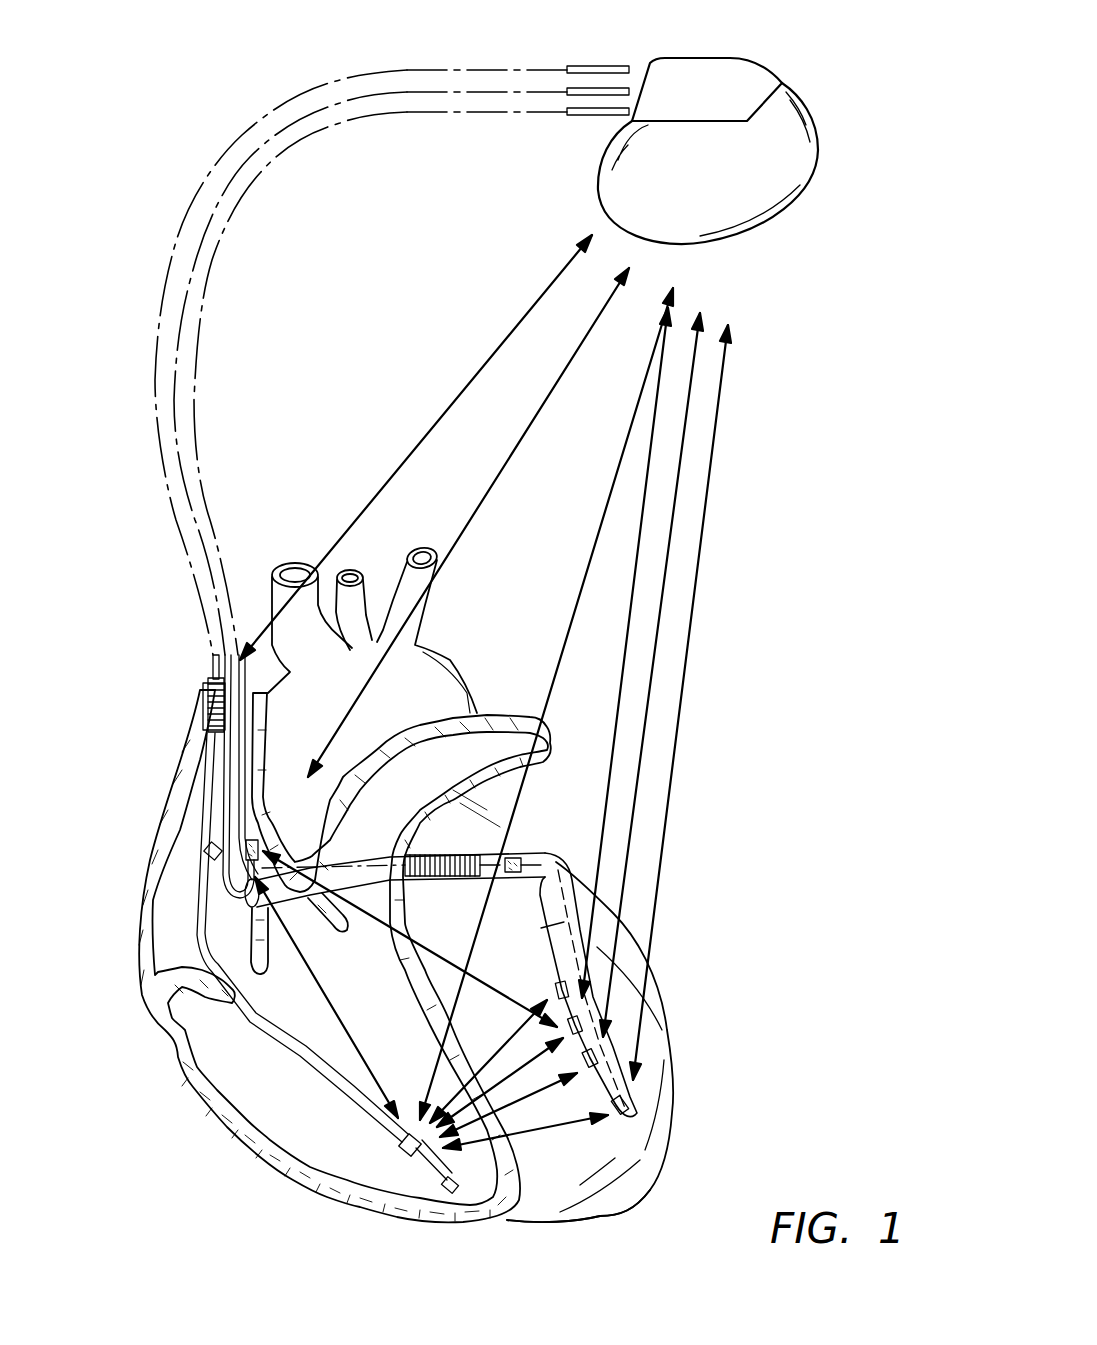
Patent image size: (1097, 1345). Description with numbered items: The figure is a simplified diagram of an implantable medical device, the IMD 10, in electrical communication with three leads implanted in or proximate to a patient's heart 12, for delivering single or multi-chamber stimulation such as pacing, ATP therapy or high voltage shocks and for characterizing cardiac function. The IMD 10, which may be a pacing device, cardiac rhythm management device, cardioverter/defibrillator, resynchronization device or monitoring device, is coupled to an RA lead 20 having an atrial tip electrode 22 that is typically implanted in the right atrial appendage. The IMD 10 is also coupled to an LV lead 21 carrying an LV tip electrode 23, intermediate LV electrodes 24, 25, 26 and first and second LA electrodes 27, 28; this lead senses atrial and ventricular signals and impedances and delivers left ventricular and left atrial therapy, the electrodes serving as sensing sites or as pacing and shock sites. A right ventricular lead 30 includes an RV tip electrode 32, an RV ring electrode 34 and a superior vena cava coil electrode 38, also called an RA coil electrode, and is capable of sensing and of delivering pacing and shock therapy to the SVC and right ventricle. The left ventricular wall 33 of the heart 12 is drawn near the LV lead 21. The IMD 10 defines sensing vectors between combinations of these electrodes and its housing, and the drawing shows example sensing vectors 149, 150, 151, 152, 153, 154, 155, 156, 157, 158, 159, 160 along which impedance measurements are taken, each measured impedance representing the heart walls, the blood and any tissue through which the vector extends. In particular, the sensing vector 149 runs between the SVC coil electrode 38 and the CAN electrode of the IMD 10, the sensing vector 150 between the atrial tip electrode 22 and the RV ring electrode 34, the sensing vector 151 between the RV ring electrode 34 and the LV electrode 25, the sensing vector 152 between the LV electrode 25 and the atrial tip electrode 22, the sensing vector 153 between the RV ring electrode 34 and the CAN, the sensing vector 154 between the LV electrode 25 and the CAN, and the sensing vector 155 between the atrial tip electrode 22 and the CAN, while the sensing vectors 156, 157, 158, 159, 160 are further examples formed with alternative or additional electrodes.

The implantable medical device 10 is at (793, 167).
The heart 12 is at (627, 1165).
The RA lead 20 is at (360, 93).
The LV lead 21 is at (293, 140).
The atrial tip electrode 22 is at (257, 848).
The LV tip electrode 23 is at (627, 1113).
The intermediate LV electrode 24 is at (593, 1060).
The intermediate LV electrode 25 is at (580, 1023).
The intermediate LV electrode 26 is at (570, 990).
The LA electrode 27 is at (517, 857).
The LA electrode 28 is at (458, 850).
The right ventricular lead 30 is at (407, 70).
The RV tip electrode 32 is at (460, 1197).
The left ventricular wall 33 is at (510, 1223).
The RV ring electrode 34 is at (397, 1150).
The superior vena cava coil electrode 38 is at (215, 700).
The sensing vector 149 is at (492, 356).
The sensing vector 150 is at (340, 1020).
The sensing vector 151 is at (520, 1068).
The sensing vector 152 is at (367, 913).
The sensing vector 153 is at (597, 533).
The sensing vector 154 is at (628, 632).
The sensing vector 155 is at (468, 518).
The sensing vector 156 is at (697, 350).
The sensing vector 157 is at (720, 433).
The sensing vector 158 is at (545, 1127).
The sensing vector 159 is at (535, 1092).
The sensing vector 160 is at (505, 1043).